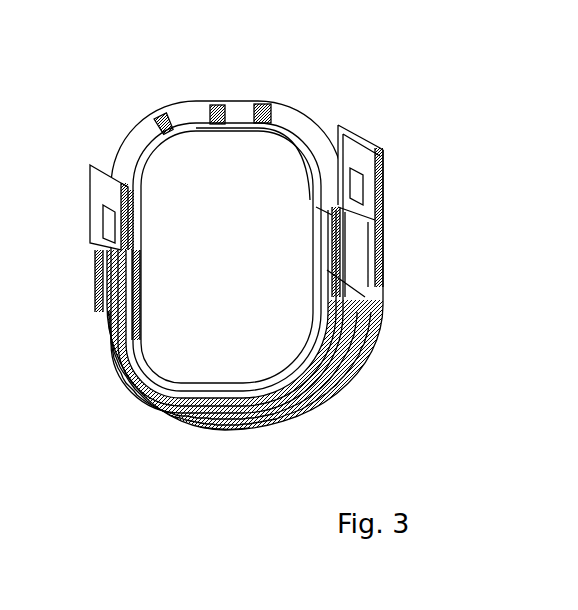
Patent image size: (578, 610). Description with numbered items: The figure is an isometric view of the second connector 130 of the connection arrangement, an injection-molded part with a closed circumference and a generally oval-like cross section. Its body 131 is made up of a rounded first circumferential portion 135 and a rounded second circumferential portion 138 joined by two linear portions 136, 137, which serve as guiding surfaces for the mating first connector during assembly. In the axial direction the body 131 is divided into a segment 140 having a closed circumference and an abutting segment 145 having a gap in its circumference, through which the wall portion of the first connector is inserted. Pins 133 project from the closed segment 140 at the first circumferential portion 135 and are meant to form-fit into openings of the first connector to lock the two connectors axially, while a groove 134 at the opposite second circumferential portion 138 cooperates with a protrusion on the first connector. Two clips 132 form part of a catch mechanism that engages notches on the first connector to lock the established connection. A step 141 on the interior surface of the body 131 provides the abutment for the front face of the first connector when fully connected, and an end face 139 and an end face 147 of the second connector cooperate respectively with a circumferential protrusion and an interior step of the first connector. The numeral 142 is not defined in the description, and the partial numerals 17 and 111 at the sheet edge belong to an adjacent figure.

The second connector 130 is at (105, 141).
The body 131 is at (370, 354).
The clips 132 is at (112, 193).
The pins 133 is at (172, 125).
The groove 134 is at (320, 377).
The first circumferential portion 135 is at (201, 131).
The linear portion 136 is at (384, 252).
The linear portion 137 is at (107, 297).
The second circumferential portion 138 is at (213, 424).
The end face 139 is at (322, 405).
The segment 140 is at (148, 145).
The step 141 is at (327, 330).
The inner edge 142 is at (316, 302).
The abutting segment 145 is at (362, 263).
The end face 147 is at (283, 133).
The partial numeral (adjacent figure) 17 is at (15, 453).
The partial numeral (adjacent figure) 111 is at (23, 553).